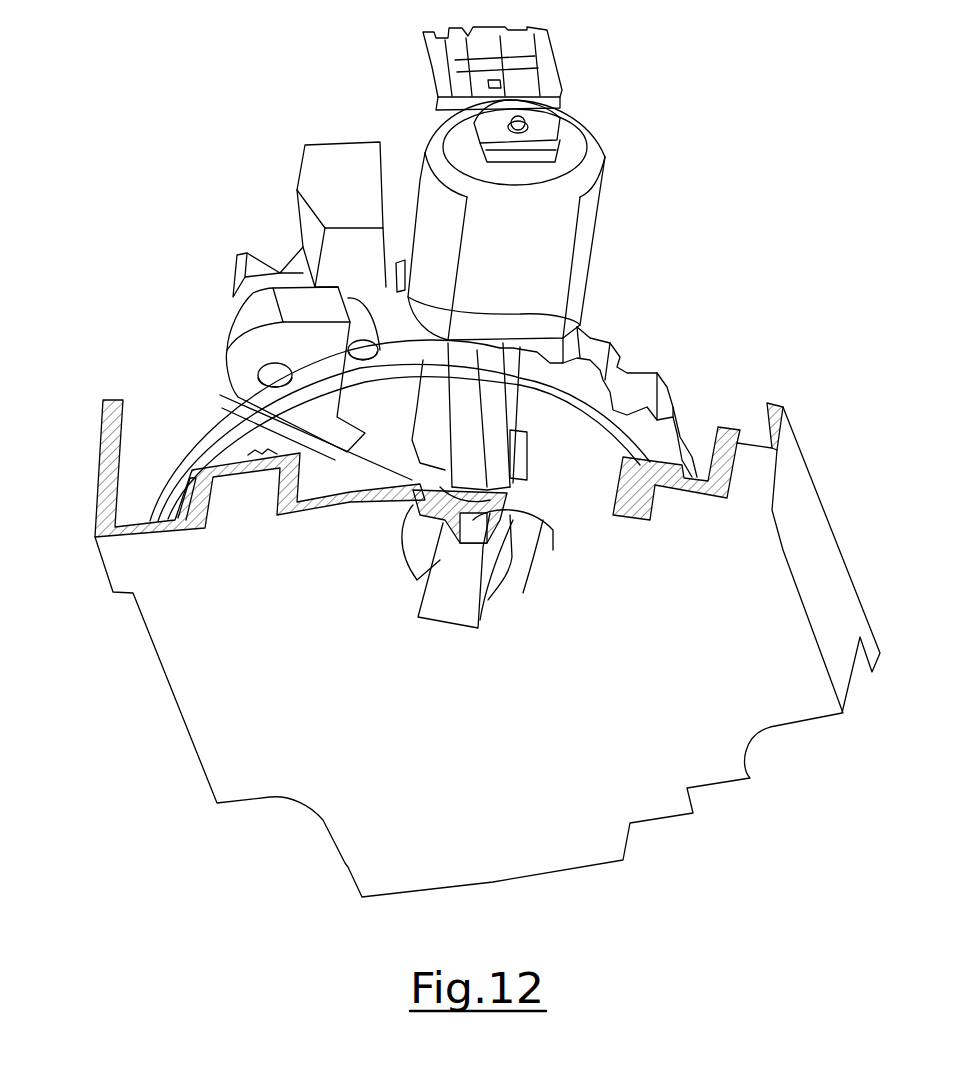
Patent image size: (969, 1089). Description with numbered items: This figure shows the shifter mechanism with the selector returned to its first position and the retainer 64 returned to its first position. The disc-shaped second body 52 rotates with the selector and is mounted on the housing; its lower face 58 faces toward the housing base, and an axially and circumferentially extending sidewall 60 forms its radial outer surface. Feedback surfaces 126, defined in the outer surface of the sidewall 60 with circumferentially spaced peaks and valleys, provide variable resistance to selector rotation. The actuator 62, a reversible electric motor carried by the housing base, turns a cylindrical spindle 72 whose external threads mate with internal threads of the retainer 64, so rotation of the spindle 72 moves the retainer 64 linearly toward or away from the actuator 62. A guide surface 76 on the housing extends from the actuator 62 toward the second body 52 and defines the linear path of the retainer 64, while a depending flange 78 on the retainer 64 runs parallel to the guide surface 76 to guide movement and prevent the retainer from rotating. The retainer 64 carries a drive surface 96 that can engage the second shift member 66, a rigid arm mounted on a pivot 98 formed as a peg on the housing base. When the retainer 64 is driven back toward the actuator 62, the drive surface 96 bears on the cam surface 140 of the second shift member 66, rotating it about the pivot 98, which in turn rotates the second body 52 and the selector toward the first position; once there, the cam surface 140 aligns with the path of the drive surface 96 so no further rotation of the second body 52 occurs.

The second body 52 is at (195, 396).
The lower face 58 is at (590, 463).
The sidewall 60 is at (173, 467).
The actuator 62 is at (583, 230).
The retainer 64 is at (302, 198).
The second shift member 66 is at (238, 272).
The spindle 72 is at (470, 512).
The guide surface 76 is at (480, 523).
The flange 78 is at (480, 485).
The drive surface 96 is at (372, 350).
The pivot 98 is at (270, 368).
The feedback surfaces 126 is at (561, 182).
The cam surface 140 is at (381, 345).